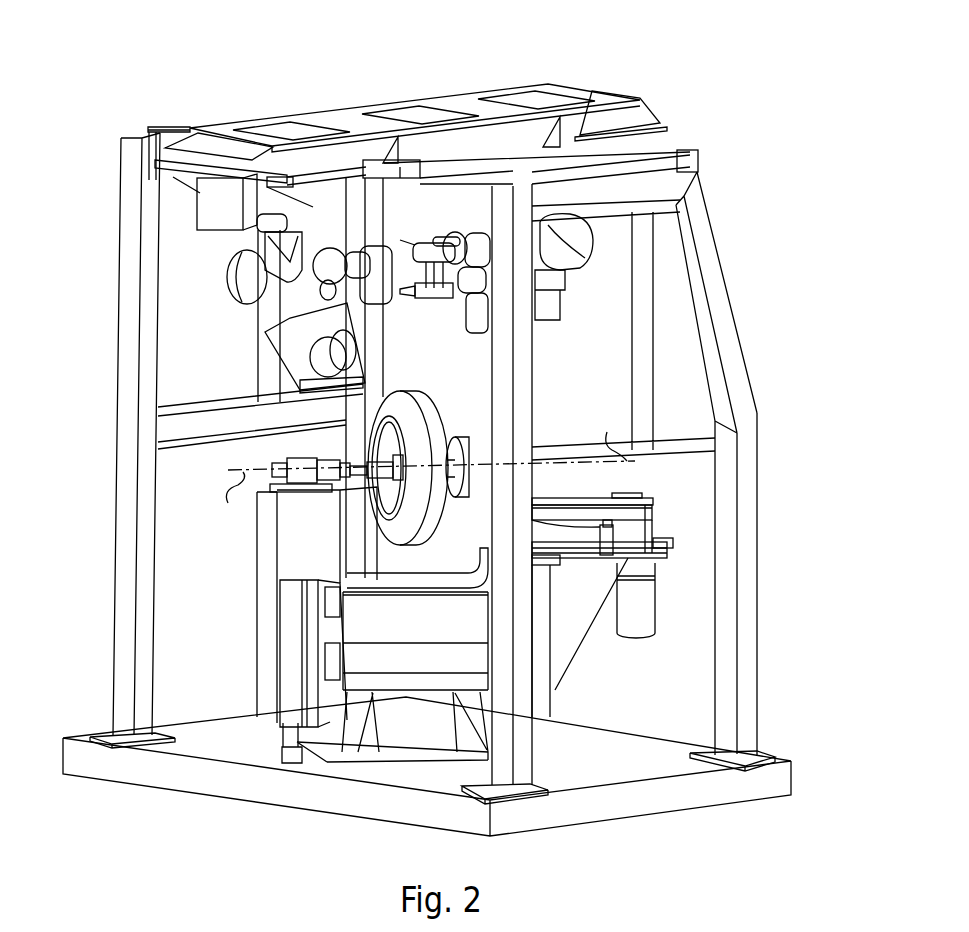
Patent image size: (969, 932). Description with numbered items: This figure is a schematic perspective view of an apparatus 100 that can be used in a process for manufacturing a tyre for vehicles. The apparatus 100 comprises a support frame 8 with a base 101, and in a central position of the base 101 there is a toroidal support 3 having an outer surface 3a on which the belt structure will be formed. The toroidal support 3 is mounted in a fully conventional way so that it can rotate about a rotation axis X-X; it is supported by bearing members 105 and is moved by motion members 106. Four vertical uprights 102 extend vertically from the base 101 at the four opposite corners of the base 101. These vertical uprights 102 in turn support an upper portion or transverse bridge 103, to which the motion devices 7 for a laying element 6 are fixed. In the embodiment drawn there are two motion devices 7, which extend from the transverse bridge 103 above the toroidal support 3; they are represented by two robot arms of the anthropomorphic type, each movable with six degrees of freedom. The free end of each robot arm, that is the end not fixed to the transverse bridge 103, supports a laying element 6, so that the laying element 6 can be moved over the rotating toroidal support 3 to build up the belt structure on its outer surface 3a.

The apparatus 100 is at (724, 126).
The base 101 is at (793, 780).
The vertical uprights 102 is at (384, 328).
The transverse bridge 103 is at (608, 92).
The bearing members 105 is at (257, 548).
The motion members 106 is at (655, 586).
The toroidal support 3 is at (432, 396).
The outer surface 3a is at (430, 515).
The laying element 6 is at (428, 305).
The motion device 7 is at (253, 318).
The support frame 8 is at (766, 433).